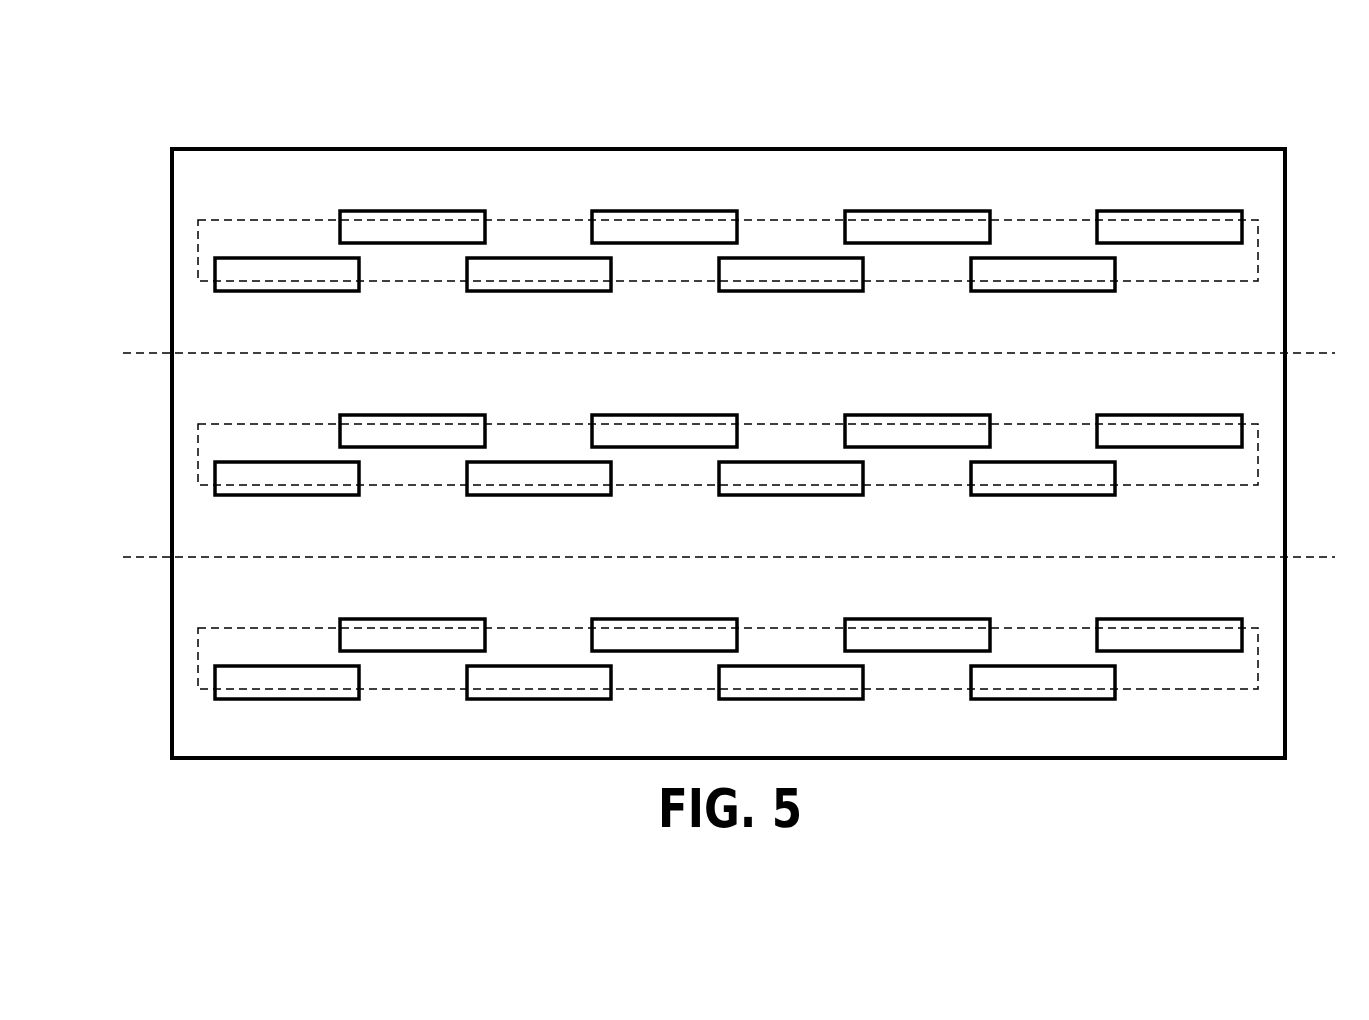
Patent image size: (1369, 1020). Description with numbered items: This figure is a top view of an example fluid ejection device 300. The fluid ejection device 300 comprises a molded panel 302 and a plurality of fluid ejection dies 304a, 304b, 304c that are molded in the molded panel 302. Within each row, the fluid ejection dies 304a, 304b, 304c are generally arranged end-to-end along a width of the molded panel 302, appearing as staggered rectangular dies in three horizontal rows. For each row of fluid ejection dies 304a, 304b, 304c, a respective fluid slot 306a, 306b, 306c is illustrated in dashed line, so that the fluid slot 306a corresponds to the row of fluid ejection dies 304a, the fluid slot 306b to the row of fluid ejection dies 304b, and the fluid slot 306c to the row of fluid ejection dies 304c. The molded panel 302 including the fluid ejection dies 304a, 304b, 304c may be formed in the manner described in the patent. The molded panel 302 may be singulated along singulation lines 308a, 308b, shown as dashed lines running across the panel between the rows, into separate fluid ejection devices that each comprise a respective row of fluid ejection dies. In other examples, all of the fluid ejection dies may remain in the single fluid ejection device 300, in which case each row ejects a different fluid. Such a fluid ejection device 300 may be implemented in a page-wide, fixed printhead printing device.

The fluid ejection device 300 is at (1061, 117).
The molded panel 302 is at (730, 148).
The fluid ejection dies 304a is at (417, 211).
The fluid ejection dies 304b is at (417, 415).
The fluid ejection dies 304c is at (417, 619).
The fluid slot 306a is at (1259, 250).
The fluid slot 306b is at (1259, 454).
The fluid slot 306c is at (1259, 658).
The singulation line 308a is at (135, 352).
The singulation line 308b is at (135, 556).